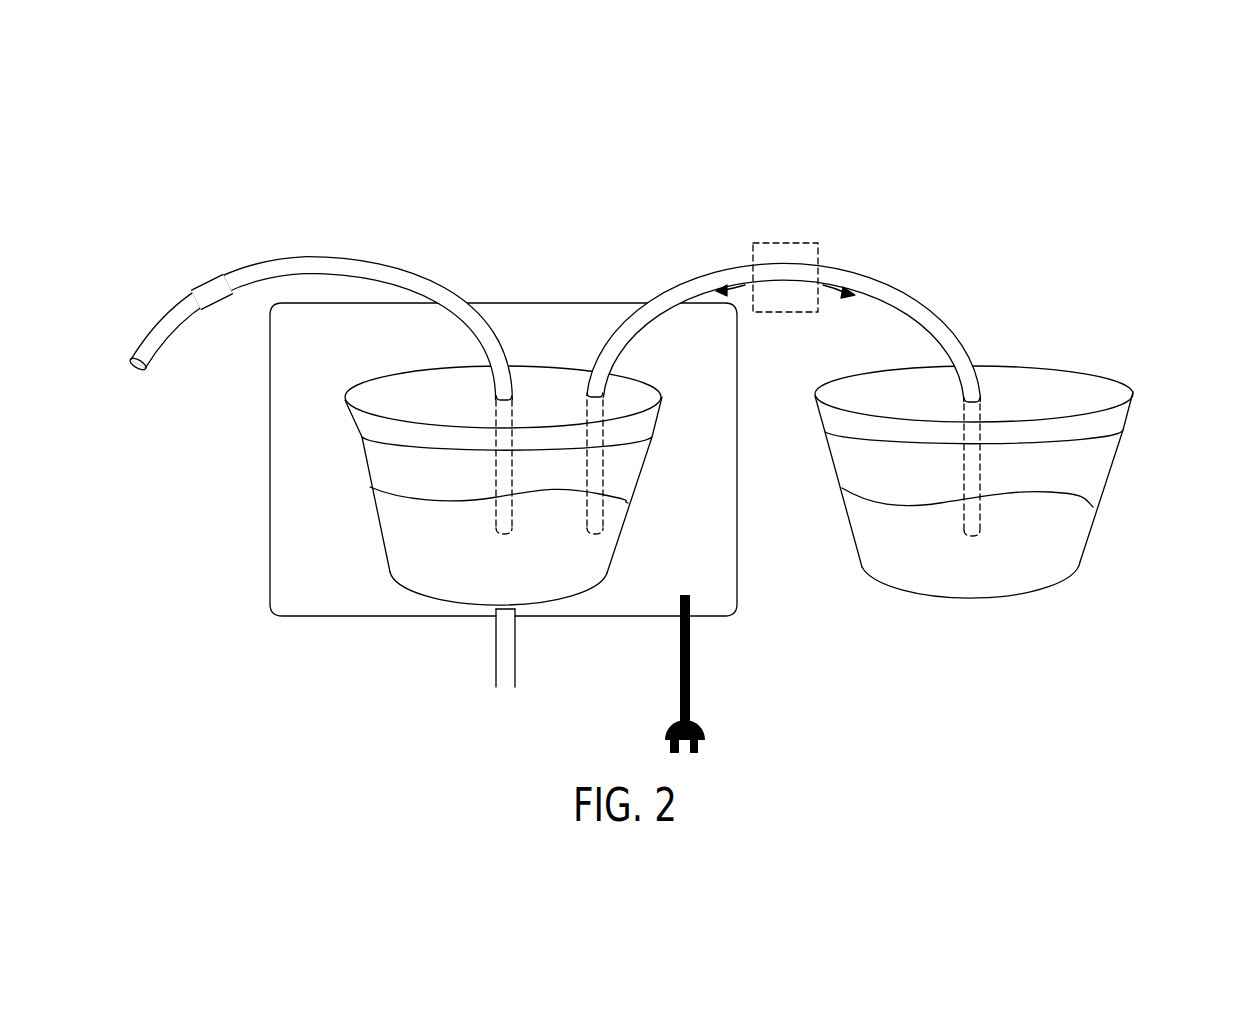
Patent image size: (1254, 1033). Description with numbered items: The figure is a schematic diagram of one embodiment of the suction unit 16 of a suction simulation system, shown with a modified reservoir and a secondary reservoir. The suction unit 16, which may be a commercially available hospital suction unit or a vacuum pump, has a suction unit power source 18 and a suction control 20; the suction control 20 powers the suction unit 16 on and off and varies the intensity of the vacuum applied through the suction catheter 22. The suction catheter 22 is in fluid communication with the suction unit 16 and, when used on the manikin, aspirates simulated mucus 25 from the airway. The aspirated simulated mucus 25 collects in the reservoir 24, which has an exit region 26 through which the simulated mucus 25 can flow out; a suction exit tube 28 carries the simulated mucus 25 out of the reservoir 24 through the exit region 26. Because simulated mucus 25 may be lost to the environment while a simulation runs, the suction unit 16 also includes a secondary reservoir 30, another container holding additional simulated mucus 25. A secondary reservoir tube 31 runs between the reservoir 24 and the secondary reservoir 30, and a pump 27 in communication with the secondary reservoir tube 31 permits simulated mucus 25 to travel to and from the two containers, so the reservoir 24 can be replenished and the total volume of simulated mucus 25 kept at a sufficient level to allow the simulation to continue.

The suction unit 16 is at (703, 148).
The suction unit power source 18 is at (690, 693).
The suction control 20 is at (592, 303).
The suction catheter 22 is at (235, 277).
The reservoir 24 is at (373, 510).
The simulated mucus 25 is at (417, 558).
The exit region 26 is at (492, 613).
The pump 27 is at (780, 243).
The suction exit tube 28 is at (517, 668).
The secondary reservoir 30 is at (1087, 540).
The secondary reservoir tube 31 is at (917, 293).